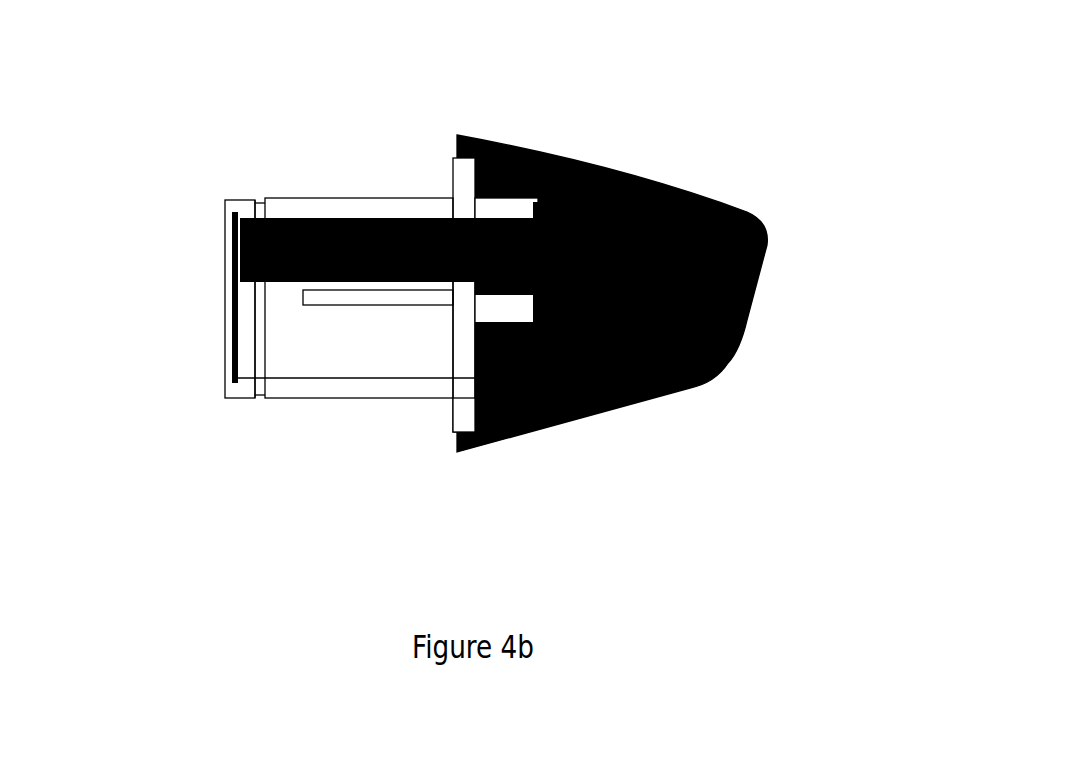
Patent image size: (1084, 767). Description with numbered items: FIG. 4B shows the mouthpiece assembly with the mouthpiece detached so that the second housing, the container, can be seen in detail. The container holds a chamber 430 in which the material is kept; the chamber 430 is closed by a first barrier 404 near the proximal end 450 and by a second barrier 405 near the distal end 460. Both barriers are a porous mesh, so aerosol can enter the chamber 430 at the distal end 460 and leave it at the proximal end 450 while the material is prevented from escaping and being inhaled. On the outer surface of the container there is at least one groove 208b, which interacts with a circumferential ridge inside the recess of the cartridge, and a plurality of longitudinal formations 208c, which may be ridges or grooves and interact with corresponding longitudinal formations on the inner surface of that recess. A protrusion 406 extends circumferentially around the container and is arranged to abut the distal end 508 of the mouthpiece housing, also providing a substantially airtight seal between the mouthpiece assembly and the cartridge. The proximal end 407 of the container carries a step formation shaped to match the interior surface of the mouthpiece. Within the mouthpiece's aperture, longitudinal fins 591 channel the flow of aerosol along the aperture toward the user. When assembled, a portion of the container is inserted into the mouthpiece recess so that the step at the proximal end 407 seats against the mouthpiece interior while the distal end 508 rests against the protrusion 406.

The groove 208b is at (258, 198).
The second barrier 405 is at (227, 285).
The distal end 460 is at (203, 310).
The distal end of the mouthpiece 508 is at (457, 145).
The first barrier 404 is at (610, 168).
The proximal end 450 is at (717, 202).
The longitudinal fins 591 is at (765, 260).
The proximal end of the container 407 is at (657, 400).
The chamber 430 is at (400, 357).
The protrusion 406 is at (467, 420).
The longitudinal formation 208c is at (372, 295).